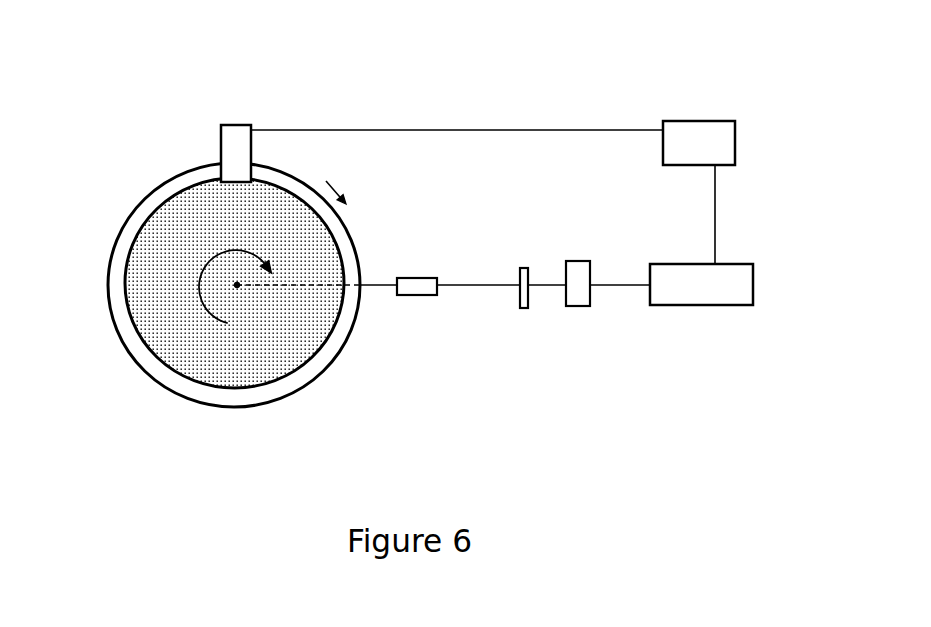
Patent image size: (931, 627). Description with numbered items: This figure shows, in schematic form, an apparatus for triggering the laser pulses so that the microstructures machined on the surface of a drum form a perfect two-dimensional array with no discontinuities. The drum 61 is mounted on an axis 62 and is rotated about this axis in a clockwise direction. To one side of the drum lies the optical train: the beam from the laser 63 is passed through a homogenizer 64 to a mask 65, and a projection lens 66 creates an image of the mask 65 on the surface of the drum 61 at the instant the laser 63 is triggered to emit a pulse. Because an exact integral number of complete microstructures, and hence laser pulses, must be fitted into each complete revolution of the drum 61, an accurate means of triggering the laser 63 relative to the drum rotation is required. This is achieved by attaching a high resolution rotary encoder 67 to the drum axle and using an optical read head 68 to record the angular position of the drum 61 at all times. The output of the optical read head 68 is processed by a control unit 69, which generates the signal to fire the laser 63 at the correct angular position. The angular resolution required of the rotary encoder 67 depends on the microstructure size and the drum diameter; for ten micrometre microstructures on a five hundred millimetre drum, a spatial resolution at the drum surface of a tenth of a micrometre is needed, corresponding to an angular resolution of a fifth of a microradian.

The drum 61 is at (340, 374).
The axis 62 is at (236, 307).
The laser 63 is at (671, 322).
The homogenizer 64 is at (585, 322).
The mask 65 is at (526, 329).
The projection lens 66 is at (431, 311).
The rotary encoder 67 is at (173, 202).
The optical read head 68 is at (265, 118).
The control unit 69 is at (667, 114).